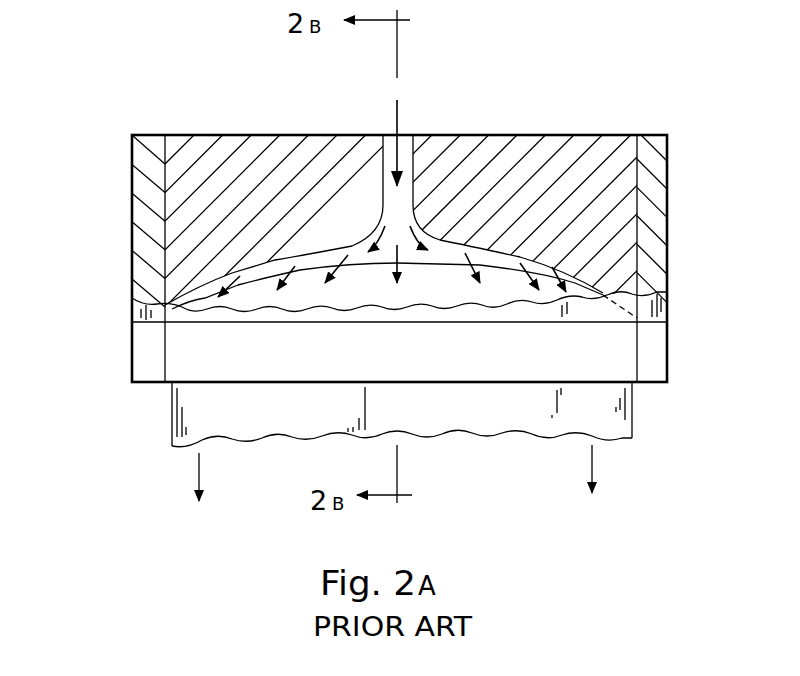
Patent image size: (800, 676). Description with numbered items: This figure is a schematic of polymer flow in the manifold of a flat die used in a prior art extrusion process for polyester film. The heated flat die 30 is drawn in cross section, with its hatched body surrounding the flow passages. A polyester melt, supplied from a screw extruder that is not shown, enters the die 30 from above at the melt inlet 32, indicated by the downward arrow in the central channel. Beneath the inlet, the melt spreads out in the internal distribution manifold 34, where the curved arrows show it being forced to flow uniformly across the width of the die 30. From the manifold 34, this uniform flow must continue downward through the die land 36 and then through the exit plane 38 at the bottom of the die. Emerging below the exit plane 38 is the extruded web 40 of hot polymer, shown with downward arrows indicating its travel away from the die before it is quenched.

The heated flat die 30 is at (112, 272).
The melt inlet 32 is at (405, 150).
The internal distribution manifold 34 is at (600, 282).
The die land 36 is at (600, 352).
The exit plane 38 is at (618, 407).
The extruded web 40 is at (278, 415).